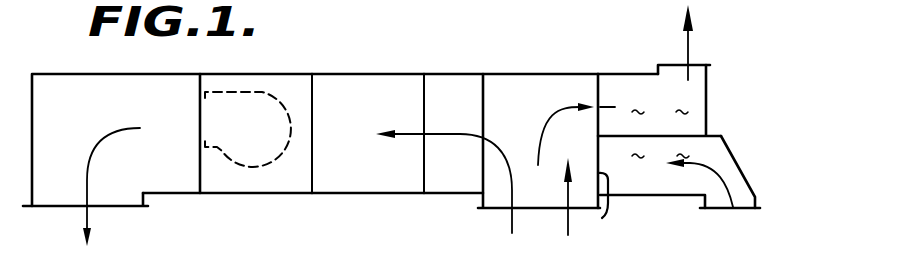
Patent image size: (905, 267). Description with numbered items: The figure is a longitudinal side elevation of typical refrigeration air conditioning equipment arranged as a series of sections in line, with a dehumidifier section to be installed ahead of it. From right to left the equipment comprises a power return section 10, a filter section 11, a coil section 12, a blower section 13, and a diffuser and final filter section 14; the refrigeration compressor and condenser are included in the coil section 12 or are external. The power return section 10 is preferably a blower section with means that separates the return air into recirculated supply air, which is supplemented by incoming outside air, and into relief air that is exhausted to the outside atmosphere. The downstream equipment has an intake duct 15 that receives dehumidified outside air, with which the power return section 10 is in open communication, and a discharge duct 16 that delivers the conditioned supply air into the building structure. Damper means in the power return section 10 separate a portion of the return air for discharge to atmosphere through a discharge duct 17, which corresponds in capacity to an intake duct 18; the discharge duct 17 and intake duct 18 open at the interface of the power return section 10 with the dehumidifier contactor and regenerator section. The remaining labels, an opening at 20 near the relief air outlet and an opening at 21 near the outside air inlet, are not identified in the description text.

The power return section 10 is at (545, 87).
The filter section 11 is at (465, 87).
The coil section 12 is at (385, 87).
The blower section 13 is at (270, 87).
The diffuser and final filter section 14 is at (121, 86).
The intake duct 15 is at (606, 216).
The discharge duct 16 is at (60, 210).
The discharge duct 17 is at (659, 136).
The intake duct 18 is at (687, 190).
The exhaust outlet 20 is at (698, 64).
The outside air inlet 21 is at (718, 212).